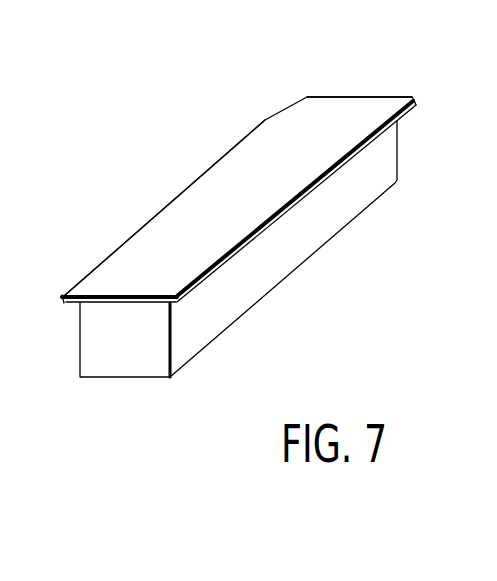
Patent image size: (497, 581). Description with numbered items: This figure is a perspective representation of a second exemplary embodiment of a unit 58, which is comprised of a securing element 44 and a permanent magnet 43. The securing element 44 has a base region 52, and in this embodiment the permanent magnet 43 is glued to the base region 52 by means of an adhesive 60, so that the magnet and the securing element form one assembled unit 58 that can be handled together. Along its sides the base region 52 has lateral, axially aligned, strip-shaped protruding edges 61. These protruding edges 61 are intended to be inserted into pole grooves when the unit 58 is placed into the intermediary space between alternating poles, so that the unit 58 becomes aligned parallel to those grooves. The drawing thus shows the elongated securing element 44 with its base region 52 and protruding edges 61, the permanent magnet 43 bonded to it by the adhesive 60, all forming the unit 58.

The permanent magnet 43 is at (325, 225).
The securing element 44 is at (178, 194).
The base region 52 is at (323, 128).
The unit 58 is at (240, 140).
The adhesive 60 is at (120, 305).
The protruding edges 61 is at (68, 293).